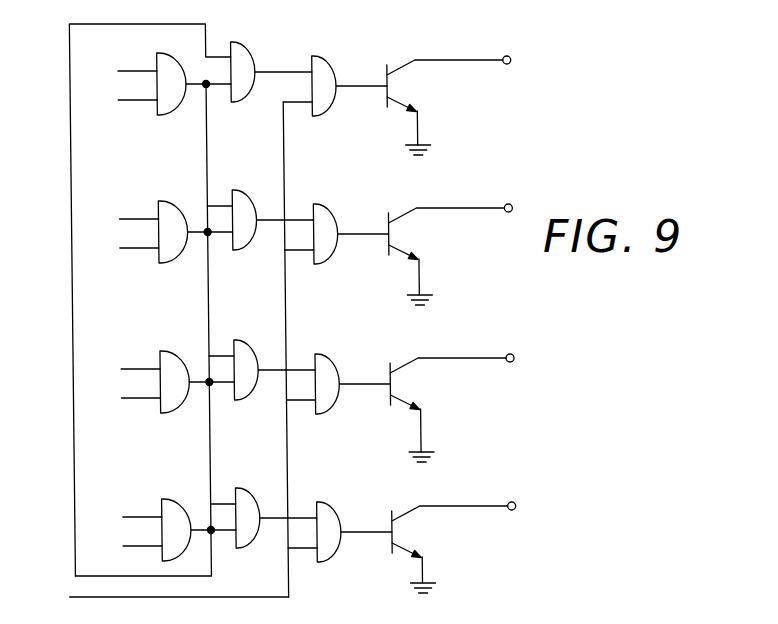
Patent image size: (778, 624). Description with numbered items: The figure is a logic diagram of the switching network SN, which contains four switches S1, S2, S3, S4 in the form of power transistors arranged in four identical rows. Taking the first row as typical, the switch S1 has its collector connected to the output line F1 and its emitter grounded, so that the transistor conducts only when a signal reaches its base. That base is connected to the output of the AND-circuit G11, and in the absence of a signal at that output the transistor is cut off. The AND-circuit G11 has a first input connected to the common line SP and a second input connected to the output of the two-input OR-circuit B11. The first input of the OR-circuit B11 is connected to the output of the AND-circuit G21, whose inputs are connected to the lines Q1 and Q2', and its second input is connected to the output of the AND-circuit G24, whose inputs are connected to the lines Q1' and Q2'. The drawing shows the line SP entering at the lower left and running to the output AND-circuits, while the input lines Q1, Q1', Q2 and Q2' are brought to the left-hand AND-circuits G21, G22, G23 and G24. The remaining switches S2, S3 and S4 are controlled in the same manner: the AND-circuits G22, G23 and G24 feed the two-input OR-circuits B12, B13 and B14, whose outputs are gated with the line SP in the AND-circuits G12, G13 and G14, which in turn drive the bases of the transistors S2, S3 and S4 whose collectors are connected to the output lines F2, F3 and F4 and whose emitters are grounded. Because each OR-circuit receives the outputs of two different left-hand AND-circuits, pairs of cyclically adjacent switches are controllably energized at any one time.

The switching network SN is at (419, 622).
The line SP is at (70, 597).
The line Q1 is at (132, 201).
The line Q1' is at (134, 346).
The line Q2 is at (134, 347).
The line Q2' is at (133, 337).
The AND-circuit G21 is at (206, 10).
The AND-circuit G22 is at (206, 158).
The AND-circuit G23 is at (206, 308).
The AND-circuit G24 is at (206, 456).
The two-input OR-circuit B11 is at (239, 103).
The two-input OR-circuit B12 is at (239, 251).
The two-input OR-circuit B13 is at (239, 401).
The two-input OR-circuit B14 is at (239, 549).
The AND-circuit G11 is at (321, 57).
The AND-circuit G12 is at (321, 205).
The AND-circuit G13 is at (321, 355).
The AND-circuit G14 is at (321, 503).
The switch S1 is at (402, 86).
The switch S2 is at (402, 234).
The switch S3 is at (402, 384).
The switch S4 is at (402, 532).
The line F1 is at (463, 60).
The line F2 is at (463, 208).
The line F3 is at (463, 358).
The line F4 is at (463, 506).